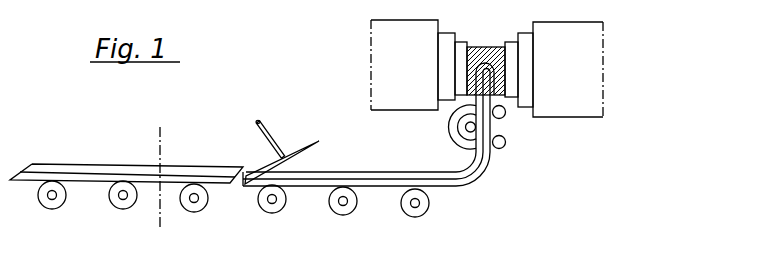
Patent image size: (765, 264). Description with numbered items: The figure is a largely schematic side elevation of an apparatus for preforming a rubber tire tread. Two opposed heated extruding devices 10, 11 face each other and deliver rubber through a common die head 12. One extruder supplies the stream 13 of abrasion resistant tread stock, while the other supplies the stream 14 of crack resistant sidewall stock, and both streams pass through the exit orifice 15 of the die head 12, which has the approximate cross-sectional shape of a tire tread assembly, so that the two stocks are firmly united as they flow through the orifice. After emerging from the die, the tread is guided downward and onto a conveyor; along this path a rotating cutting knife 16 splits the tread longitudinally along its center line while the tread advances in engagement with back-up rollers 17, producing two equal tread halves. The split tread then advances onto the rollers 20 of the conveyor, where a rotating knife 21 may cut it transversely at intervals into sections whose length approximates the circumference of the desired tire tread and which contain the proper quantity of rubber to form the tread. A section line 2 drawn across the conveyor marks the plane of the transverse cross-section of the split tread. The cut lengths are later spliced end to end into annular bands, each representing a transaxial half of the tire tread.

The section line 2- 2 is at (159, 181).
The heated extruding device 10 is at (378, 69).
The heated extruding device 11 is at (590, 98).
The common die head 12 is at (483, 50).
The stream of abrasion resistant tread stock 13 is at (450, 174).
The stream of crack resistant sidewall stock 14 is at (474, 188).
The exit orifice 15 is at (455, 97).
The rotating cutting knife 16 is at (468, 128).
The back-up rollers 17 is at (505, 147).
The conveyor rollers 20 is at (344, 214).
The rotating knife 21 is at (305, 138).